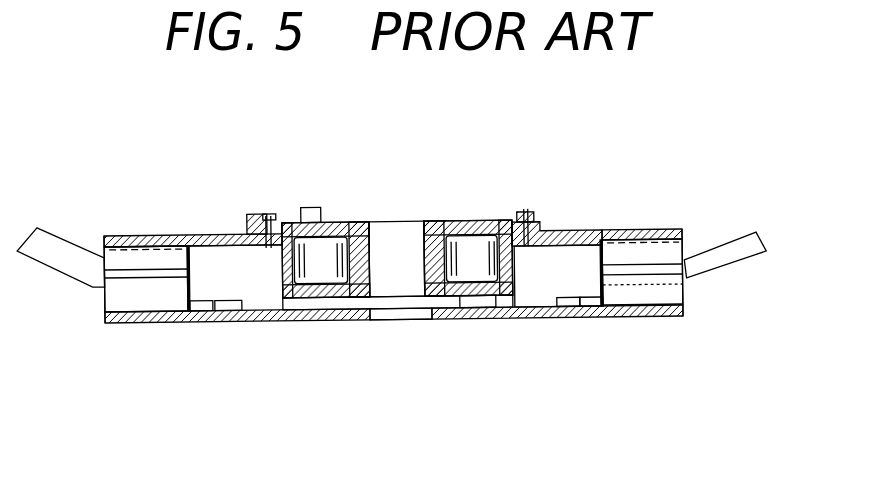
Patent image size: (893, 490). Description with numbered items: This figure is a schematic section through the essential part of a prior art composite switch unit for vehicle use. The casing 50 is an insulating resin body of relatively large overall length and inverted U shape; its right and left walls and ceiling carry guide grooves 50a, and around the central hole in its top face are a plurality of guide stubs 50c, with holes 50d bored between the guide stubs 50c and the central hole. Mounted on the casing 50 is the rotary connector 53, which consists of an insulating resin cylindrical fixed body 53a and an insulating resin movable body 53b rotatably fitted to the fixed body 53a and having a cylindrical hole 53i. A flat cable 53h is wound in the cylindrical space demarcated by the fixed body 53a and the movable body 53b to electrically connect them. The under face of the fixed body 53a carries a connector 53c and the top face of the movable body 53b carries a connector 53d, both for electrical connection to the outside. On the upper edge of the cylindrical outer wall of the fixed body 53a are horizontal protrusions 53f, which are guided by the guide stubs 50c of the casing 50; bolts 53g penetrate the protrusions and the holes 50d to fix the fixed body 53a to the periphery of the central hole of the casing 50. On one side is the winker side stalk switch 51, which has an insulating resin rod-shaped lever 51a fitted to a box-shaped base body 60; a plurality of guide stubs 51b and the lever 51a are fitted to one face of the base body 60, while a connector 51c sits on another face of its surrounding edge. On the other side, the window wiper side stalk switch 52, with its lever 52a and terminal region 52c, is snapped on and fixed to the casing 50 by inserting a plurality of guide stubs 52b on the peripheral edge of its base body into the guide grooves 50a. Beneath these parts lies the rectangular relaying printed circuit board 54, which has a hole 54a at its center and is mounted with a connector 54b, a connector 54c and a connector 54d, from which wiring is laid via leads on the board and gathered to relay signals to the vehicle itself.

The casing 50 is at (184, 229).
The guide grooves 50a is at (151, 249).
The guide stubs 50c is at (233, 239).
The holes 50d is at (514, 227).
The winker side stalk switch 51 is at (688, 242).
The lever 51a is at (733, 258).
The guide stubs 51b is at (626, 236).
The connector 51c is at (598, 313).
The window wiper side stalk switch 52 is at (103, 233).
The first connector lead wire 52a is at (59, 236).
The guide stubs 52b is at (111, 237).
The first connector retainer 52c is at (203, 304).
The rotary connector 53 is at (410, 234).
The fixed body 53a is at (296, 307).
The movable body 53b is at (361, 228).
The connector 53c is at (456, 311).
The connector 53d is at (315, 211).
The protrusions 53f is at (271, 224).
The bolts 53g is at (257, 218).
The flat cable 53h is at (518, 272).
The cylindrical hole 53i is at (411, 244).
The relaying printed circuit board 54 is at (470, 324).
The hole 54a is at (401, 324).
The connector 54b is at (490, 313).
The connector 54c is at (231, 305).
The connector 54d is at (567, 313).
The base body 60 is at (680, 296).